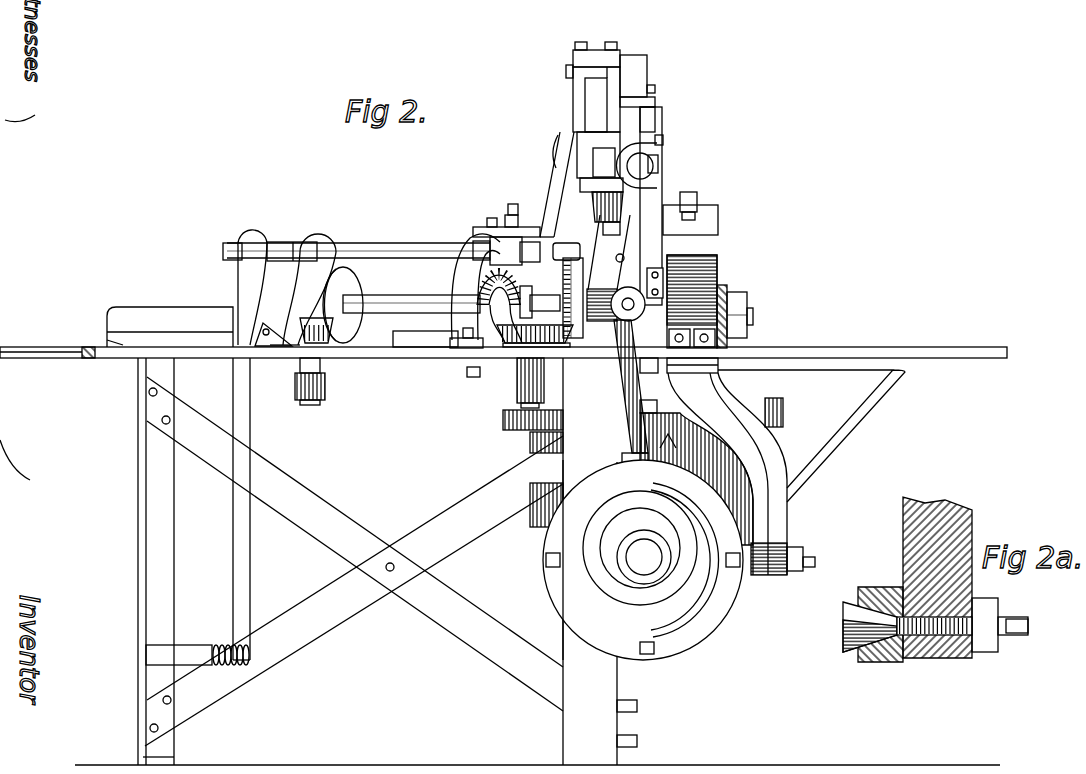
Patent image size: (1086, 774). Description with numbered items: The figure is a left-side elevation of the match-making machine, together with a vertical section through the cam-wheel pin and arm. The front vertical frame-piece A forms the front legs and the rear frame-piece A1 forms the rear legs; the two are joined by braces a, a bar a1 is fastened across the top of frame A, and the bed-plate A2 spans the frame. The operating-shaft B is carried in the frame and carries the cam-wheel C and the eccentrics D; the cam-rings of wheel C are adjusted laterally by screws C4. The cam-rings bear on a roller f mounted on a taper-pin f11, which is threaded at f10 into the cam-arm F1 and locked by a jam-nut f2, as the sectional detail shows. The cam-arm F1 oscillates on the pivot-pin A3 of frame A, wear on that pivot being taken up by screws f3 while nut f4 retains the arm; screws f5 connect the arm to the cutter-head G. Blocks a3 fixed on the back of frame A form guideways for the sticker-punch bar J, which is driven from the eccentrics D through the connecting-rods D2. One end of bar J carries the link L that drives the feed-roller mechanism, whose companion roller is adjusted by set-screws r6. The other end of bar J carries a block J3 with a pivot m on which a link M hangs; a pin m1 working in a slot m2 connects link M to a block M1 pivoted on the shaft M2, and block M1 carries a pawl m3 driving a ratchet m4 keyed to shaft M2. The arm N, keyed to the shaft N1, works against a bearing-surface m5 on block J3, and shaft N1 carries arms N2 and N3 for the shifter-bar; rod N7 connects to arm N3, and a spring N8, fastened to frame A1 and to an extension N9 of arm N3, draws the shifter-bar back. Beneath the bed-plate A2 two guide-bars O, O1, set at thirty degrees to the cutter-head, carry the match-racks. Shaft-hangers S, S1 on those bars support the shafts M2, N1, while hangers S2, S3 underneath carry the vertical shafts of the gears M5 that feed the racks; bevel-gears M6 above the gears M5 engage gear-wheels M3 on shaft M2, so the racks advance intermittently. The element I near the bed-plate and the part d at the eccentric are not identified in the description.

In FIG. 2, the bar a1 is at (597, 55).
In FIG. 2, the fixed blocks a3 is at (577, 106).
In FIG. 2, the cutter-head G is at (627, 125).
In FIG. 2, the bearing-surface m5 is at (553, 153).
In FIG. 2, the block J3 is at (598, 155).
In FIG. 2, the sticker-punch bar J is at (601, 191).
In FIG. 2, the pivot m is at (661, 163).
In FIG. 2, the link L is at (535, 205).
In FIG. 2, the arm N is at (557, 182).
In FIG. 2, the set-screws r6 is at (512, 204).
In FIG. 2, the link M is at (655, 205).
In FIG. 2, the screws f5 is at (697, 200).
In FIG. 2, the shaft N1 is at (383, 238).
In FIG. 2, the arm N2 is at (465, 257).
In FIG. 2, the gear-wheels M3 is at (353, 292).
In FIG. 2, the shaft M2 is at (395, 312).
In FIG. 2, the arm N3 is at (243, 276).
In FIG. 2, the pawl m3 is at (589, 255).
In FIG. 2, the block M1 is at (633, 275).
In FIG. 2, the slot m2 is at (663, 275).
In FIG. 2, the pin m1 is at (663, 290).
In FIG. 2, the pivot-pin A3 is at (748, 313).
In FIG. 2, the nut f4 is at (748, 327).
In FIG. 2, the bed-plate A2 is at (123, 345).
In FIG. 2, the box I is at (170, 327).
In FIG. 2, the guide-bar O is at (20, 352).
In FIG. 2, the guide-bar O1 is at (113, 358).
In FIG. 2, the rod N7 is at (262, 338).
In FIG. 2, the shaft-hanger S1 is at (292, 345).
In FIG. 2, the shaft-hanger S3 is at (325, 387).
In FIG. 2, the gears M5 is at (333, 343).
In FIG. 2, the bevel-gears M6 is at (310, 347).
In FIG. 2, the shaft-hanger S is at (473, 350).
In FIG. 2, the shaft-hanger S2 is at (515, 393).
In FIG. 2, the ratchet m4 is at (570, 280).
In FIG. 2, the connecting-rods D2 is at (622, 408).
In FIG. 2, the screws f3 is at (704, 347).
In FIG. 2, the cam-arm F1 is at (717, 393).
In FIG. 2A, the cam-arm F1 is at (910, 535).
In FIG. 2, the rear frame-piece A1 is at (143, 546).
In FIG. 2, the extension N9 is at (240, 533).
In FIG. 2, the braces a is at (354, 561).
In FIG. 2, the crank d is at (613, 512).
In FIG. 2, the eccentrics D is at (640, 548).
In FIG. 2, the operating-shaft B is at (644, 557).
In FIG. 2, the front vertical frame-piece A is at (628, 561).
In FIG. 2, the screws C4 is at (732, 568).
In FIG. 2, the cam-wheel C is at (703, 632).
In FIG. 2, the roller f is at (752, 578).
In FIG. 2A, the roller f is at (873, 663).
In FIG. 2, the threaded portion f10 is at (810, 568).
In FIG. 2A, the threaded portion f10 is at (940, 640).
In FIG. 2, the jam-nut f2 is at (795, 550).
In FIG. 2A, the jam-nut f2 is at (985, 652).
In FIG. 2, the spring N8 is at (217, 645).
In FIG. 2A, the taper-pin f11 is at (845, 630).